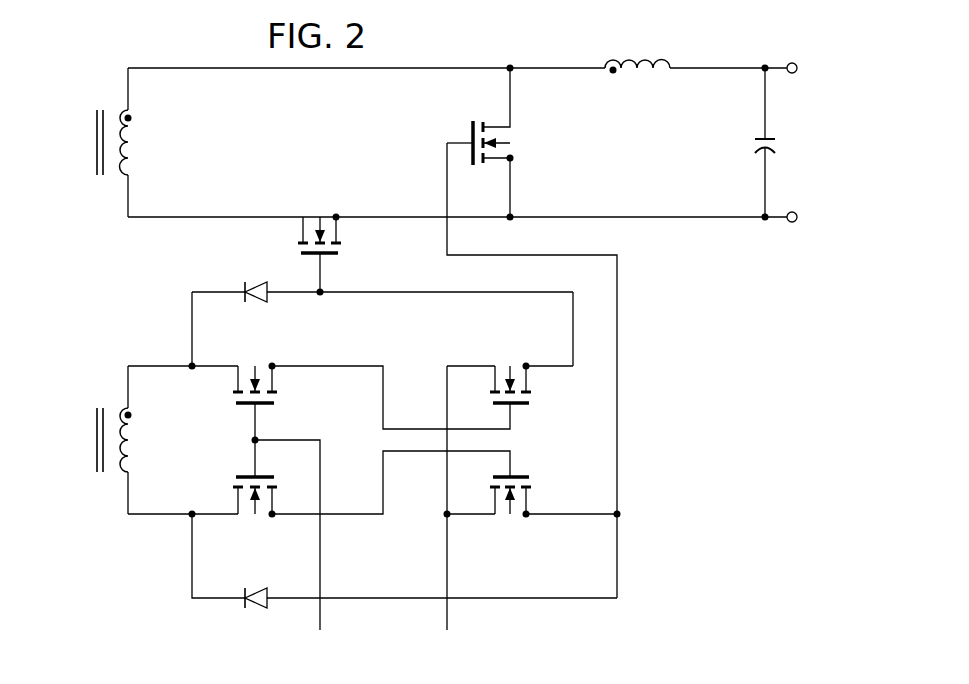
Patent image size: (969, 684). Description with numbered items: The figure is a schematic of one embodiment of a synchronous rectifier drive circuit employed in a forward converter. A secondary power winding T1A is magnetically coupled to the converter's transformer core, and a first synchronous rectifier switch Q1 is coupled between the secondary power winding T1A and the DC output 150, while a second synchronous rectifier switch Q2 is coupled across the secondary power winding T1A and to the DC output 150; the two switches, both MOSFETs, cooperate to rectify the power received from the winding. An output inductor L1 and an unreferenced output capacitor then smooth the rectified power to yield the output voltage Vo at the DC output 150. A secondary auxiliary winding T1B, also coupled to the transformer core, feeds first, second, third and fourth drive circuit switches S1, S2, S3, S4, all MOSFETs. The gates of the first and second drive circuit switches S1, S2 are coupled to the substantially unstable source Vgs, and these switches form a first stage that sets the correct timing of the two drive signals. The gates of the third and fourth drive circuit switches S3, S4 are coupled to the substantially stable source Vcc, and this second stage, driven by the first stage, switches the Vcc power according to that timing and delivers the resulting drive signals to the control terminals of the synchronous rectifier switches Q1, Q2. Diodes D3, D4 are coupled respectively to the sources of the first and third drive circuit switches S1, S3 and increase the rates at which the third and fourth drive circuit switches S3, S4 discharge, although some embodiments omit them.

The DC output 150 is at (700, 380).
The secondary power winding T1A is at (91, 142).
The secondary auxiliary winding T1B is at (91, 440).
The first synchronous rectifier switch Q1 is at (319, 243).
The second synchronous rectifier switch Q2 is at (495, 142).
The first drive circuit switch S1 is at (255, 372).
The second drive circuit switch S2 is at (255, 509).
The third drive circuit switch S3 is at (510, 372).
The fourth drive circuit switch S4 is at (510, 509).
The diode D3 is at (253, 280).
The diode D4 is at (253, 614).
The output inductor L1 is at (637, 77).
The output voltage Vo is at (782, 142).